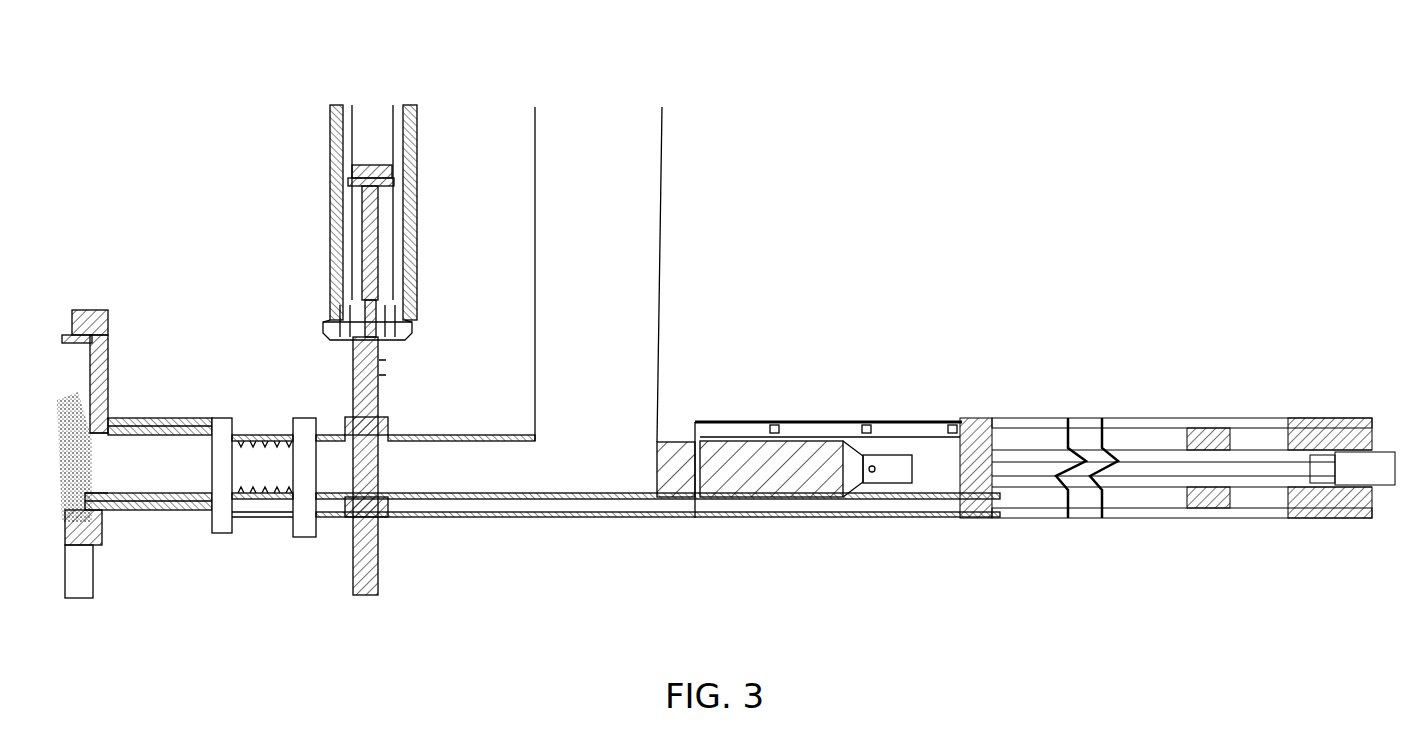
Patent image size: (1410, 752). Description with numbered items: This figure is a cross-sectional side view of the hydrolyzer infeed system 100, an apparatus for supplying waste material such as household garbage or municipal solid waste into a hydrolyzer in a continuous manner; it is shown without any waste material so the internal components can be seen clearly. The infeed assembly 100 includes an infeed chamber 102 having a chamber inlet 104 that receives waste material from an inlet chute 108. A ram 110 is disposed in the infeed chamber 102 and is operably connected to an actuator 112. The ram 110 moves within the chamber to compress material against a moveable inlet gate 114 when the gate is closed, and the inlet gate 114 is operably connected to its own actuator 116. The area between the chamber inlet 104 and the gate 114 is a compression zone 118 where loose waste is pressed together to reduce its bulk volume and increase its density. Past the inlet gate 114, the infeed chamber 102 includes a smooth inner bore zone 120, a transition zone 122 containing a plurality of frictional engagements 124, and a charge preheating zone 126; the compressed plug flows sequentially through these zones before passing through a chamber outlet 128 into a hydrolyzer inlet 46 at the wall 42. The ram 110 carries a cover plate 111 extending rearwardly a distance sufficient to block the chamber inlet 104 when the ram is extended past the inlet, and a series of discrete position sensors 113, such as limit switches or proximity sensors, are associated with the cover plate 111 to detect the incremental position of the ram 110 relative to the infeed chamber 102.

The hydrolyzer infeed system 100 is at (945, 141).
The wall 42 is at (52, 466).
The hydrolyzer inlet 46 is at (82, 445).
The infeed chamber 102 is at (492, 437).
The chamber inlet 104 is at (612, 437).
The inlet chute 108 is at (665, 145).
The ram 110 is at (750, 440).
The cover plate 111 is at (902, 437).
The actuator 112 is at (1085, 385).
The discrete position sensors 113 is at (777, 426).
The inlet gate 114 is at (355, 305).
The actuator 116 is at (375, 130).
The compression zone 118 is at (390, 512).
The smooth inner bore zone 120 is at (349, 417).
The transition zone 122 is at (290, 510).
The frictional engagements 124 is at (272, 437).
The charge preheating zone 126 is at (210, 415).
The chamber outlet 128 is at (100, 470).